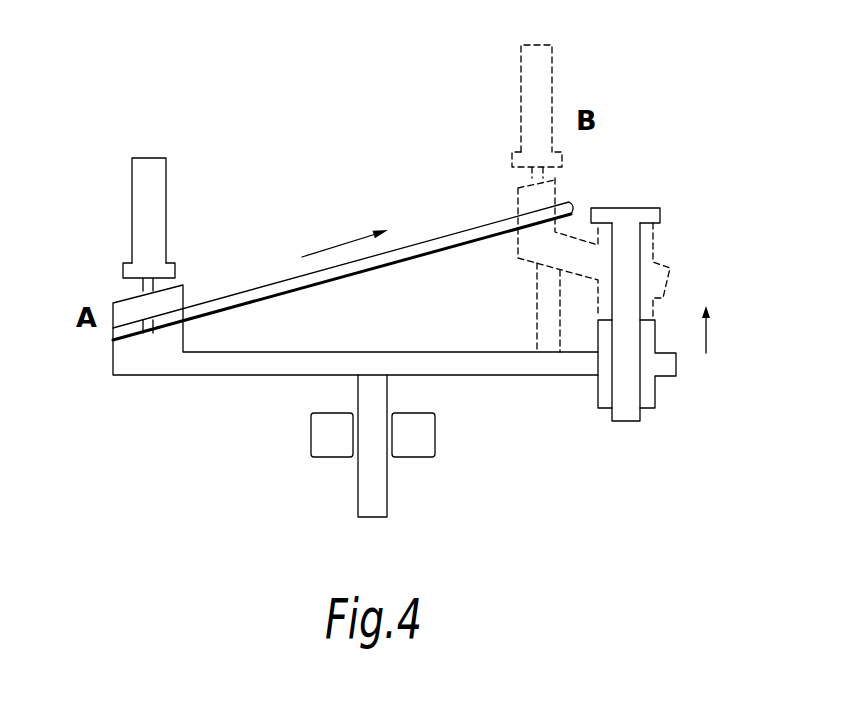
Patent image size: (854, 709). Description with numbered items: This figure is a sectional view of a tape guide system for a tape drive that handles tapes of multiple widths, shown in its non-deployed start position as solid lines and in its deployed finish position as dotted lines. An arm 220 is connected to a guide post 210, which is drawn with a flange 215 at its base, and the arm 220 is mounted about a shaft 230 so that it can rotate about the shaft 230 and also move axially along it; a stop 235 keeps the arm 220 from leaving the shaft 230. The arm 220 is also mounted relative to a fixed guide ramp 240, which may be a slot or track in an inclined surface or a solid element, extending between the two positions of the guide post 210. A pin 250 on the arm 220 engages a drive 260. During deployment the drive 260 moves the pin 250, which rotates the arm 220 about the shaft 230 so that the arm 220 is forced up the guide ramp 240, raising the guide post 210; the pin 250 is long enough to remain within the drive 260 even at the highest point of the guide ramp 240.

The guide post 210 is at (140, 190).
The pin flange 215 is at (128, 268).
The arm 220 is at (540, 255).
The shaft 230 is at (628, 279).
The stop 235 is at (658, 215).
The guide ramp 240 is at (258, 290).
The pin 250 is at (547, 335).
The drive 260 is at (325, 437).